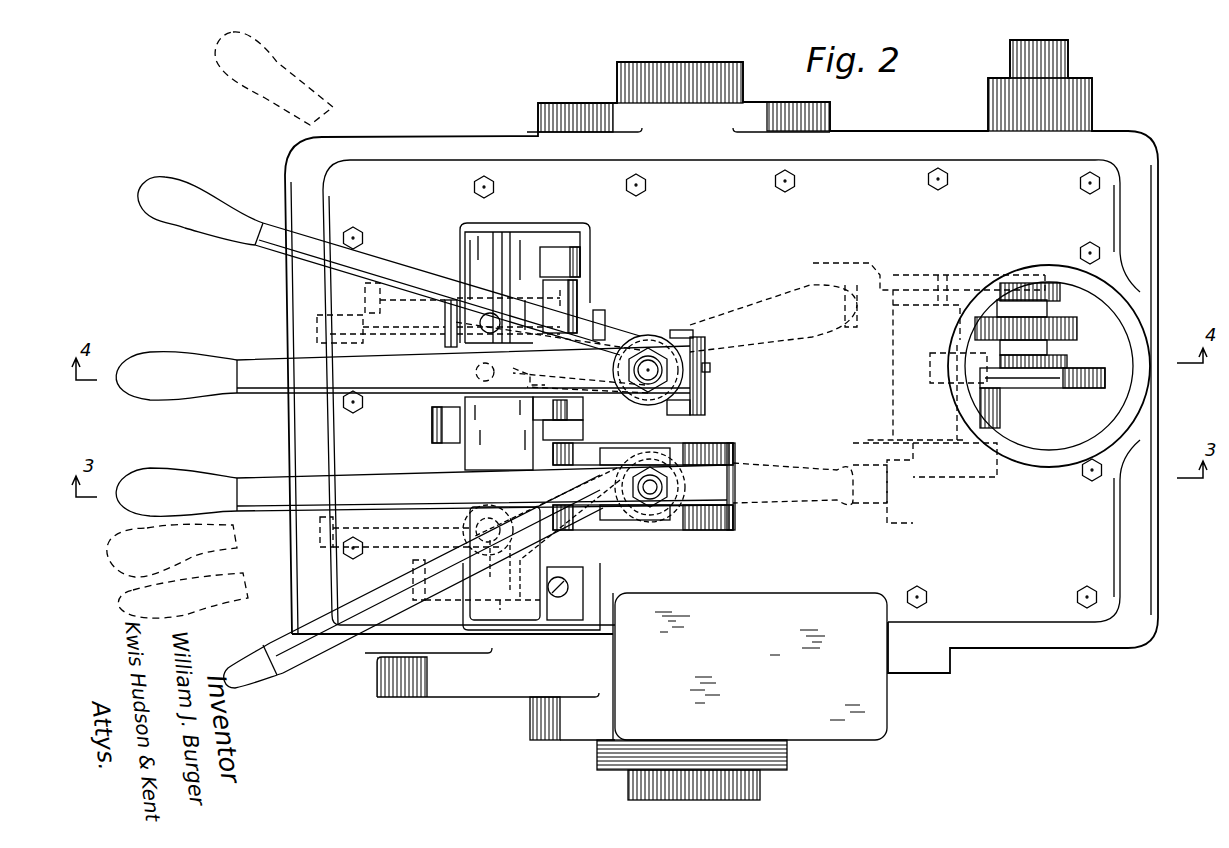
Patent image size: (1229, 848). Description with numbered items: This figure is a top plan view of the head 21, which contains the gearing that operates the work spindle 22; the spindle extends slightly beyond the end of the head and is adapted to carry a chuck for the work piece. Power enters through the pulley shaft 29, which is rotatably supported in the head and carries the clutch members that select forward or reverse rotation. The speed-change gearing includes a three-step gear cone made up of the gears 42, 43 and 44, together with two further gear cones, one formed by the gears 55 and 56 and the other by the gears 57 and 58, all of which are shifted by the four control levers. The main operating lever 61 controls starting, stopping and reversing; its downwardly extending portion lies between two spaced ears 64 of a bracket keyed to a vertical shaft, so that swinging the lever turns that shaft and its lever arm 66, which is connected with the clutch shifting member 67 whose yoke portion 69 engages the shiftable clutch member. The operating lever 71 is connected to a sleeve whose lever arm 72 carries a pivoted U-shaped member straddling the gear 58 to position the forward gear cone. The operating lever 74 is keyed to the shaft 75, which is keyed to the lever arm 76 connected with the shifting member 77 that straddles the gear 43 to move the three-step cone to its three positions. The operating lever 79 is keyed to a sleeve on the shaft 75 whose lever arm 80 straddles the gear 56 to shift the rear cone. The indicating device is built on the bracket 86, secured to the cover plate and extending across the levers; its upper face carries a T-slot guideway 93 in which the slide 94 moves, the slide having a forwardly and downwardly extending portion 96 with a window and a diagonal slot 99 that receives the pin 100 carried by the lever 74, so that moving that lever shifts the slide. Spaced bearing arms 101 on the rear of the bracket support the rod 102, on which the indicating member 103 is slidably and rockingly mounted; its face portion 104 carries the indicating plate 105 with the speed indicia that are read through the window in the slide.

The head 21 is at (470, 687).
The work spindle 22 is at (787, 766).
The pulley shaft 29 is at (1068, 54).
The gear 42 is at (1060, 292).
The gear 43 is at (1078, 333).
The gear 44 is at (1068, 364).
The gear 55 is at (365, 300).
The gear 56 is at (317, 330).
The gear 57 is at (413, 575).
The gear 58 is at (320, 529).
The main operating lever 61 is at (265, 485).
The ears 64 is at (592, 445).
The lever arm 66 is at (790, 497).
The clutch shifting member 67 is at (912, 496).
The yoke portion 69 is at (1075, 388).
The operating lever 71 is at (280, 640).
The lever arm 72 is at (476, 527).
The operating lever 74 is at (262, 365).
The shaft 75 is at (650, 358).
The lever arm 76 is at (745, 305).
The shifting member 77 is at (880, 263).
The operating lever 79 is at (250, 228).
The lever arm 80 is at (445, 298).
The bracket 86 is at (463, 249).
The guideway 93 is at (503, 262).
The slide 94 is at (475, 448).
The forwardly and downwardly extending portion 96 is at (432, 430).
The slot 99 is at (535, 380).
The pin 100 is at (476, 372).
The bearing arms 101 is at (585, 258).
The rod 102 is at (567, 408).
The indicating member 103 is at (583, 295).
The face portion 104 is at (445, 327).
The indicating plate 105 is at (445, 334).